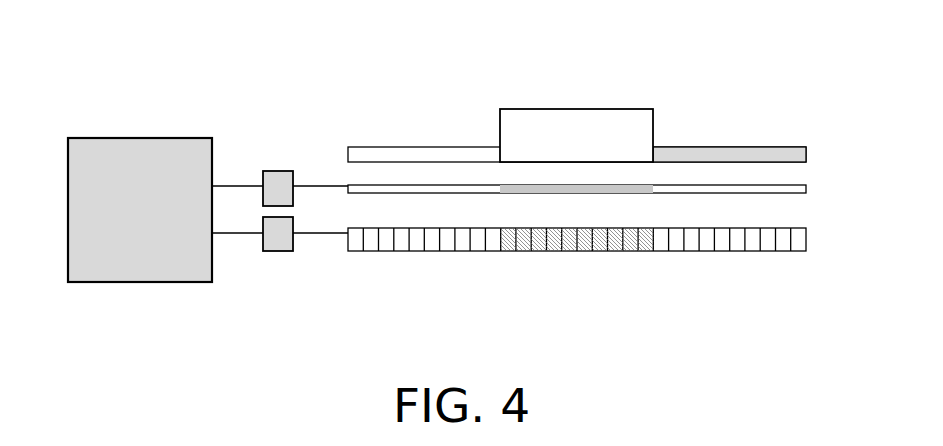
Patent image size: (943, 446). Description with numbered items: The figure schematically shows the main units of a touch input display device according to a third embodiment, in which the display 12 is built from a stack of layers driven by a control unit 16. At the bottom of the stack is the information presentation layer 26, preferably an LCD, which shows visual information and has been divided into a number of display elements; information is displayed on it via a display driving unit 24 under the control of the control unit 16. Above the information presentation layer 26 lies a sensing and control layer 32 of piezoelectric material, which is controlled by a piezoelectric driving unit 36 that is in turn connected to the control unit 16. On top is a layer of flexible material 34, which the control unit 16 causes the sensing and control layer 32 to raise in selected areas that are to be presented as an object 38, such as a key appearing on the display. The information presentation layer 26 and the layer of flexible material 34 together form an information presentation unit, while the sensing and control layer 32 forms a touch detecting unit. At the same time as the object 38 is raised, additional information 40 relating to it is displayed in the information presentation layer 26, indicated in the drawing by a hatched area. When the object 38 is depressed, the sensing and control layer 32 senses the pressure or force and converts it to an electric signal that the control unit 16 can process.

The display 12 is at (608, 180).
The control unit 16 is at (95, 137).
The display driving unit 24 is at (278, 252).
The information presentation layer 26 is at (433, 252).
The sensing and control layer 32 is at (752, 185).
The layer of flexible material 34 is at (407, 147).
The piezoelectric driving unit 36 is at (280, 170).
The object 38 is at (582, 109).
The additional information 40 is at (603, 252).